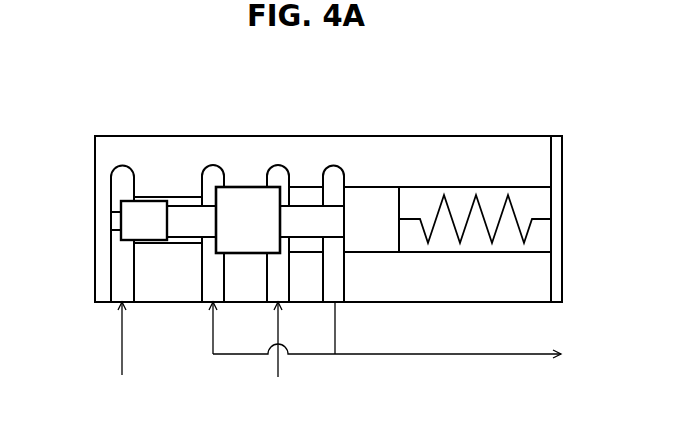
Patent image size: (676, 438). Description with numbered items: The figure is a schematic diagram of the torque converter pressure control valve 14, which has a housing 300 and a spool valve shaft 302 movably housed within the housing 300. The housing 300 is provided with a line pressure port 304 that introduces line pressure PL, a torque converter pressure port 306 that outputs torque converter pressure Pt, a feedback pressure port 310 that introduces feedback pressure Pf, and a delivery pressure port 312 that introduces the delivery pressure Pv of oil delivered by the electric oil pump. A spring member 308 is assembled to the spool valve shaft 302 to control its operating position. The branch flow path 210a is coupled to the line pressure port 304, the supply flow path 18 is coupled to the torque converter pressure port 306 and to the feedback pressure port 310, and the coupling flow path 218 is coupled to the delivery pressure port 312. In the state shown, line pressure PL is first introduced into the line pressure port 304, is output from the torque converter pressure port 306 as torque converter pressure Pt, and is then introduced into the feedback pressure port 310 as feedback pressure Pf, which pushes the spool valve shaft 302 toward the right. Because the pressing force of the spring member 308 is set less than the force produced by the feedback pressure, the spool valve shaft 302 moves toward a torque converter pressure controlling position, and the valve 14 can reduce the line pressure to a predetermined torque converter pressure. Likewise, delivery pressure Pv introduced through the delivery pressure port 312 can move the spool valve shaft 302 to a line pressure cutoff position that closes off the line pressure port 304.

The torque converter pressure control valve 14 is at (80, 92).
The housing 300 is at (309, 215).
The spool valve shaft 302 is at (245, 198).
The line pressure port 304 is at (270, 304).
The torque converter pressure port 306 is at (338, 304).
The spring member 308 is at (443, 187).
The feedback pressure port 310 is at (202, 303).
The delivery pressure port 312 is at (113, 303).
The coupling flow path 218 is at (122, 364).
The branch flow path 210a is at (278, 363).
The supply flow path 18 is at (447, 355).